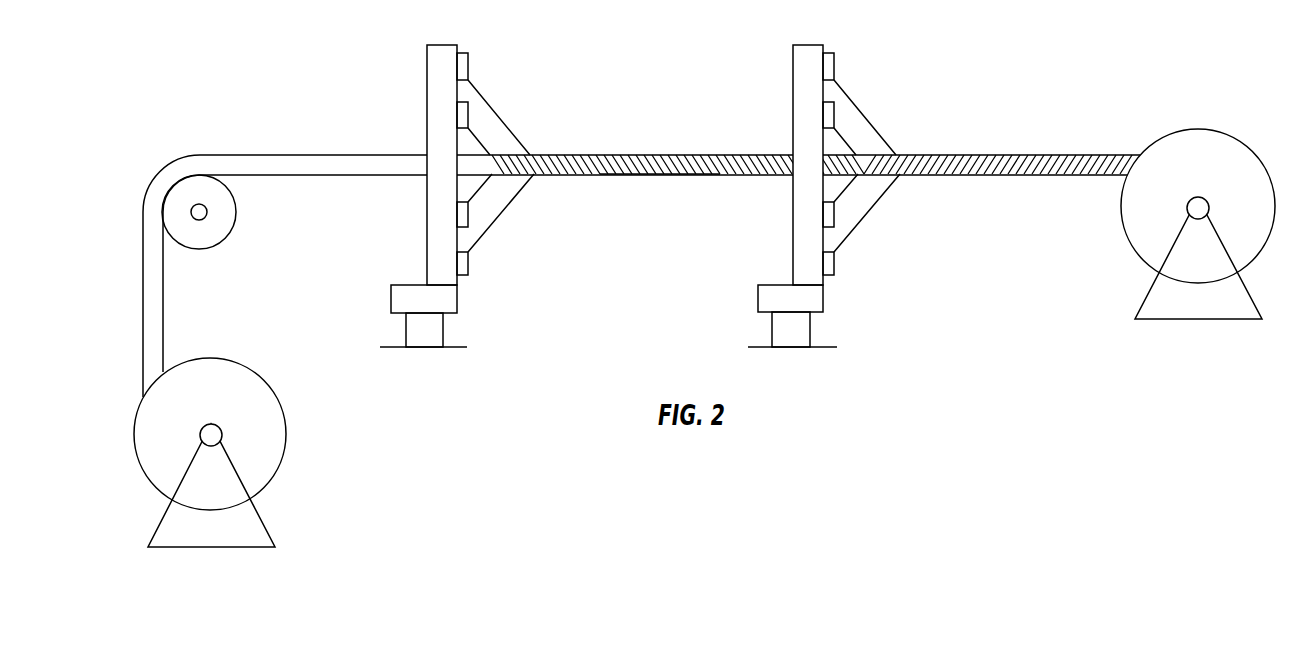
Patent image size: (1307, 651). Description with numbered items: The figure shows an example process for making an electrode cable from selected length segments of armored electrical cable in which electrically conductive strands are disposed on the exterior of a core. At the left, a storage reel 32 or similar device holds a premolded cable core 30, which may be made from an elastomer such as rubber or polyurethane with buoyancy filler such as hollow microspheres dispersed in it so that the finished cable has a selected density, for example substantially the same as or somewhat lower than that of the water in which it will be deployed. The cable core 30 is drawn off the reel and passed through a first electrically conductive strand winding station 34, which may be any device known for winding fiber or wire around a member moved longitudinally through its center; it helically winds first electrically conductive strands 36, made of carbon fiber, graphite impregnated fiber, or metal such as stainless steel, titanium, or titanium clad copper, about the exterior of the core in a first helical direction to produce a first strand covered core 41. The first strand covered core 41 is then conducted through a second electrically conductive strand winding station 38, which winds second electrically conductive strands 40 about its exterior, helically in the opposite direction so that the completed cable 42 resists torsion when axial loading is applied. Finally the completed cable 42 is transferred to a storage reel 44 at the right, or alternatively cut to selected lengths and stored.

The cable core 30 is at (212, 155).
The storage reel 32 is at (232, 380).
The first electrically conductive strand winding station 34 is at (442, 46).
The first electrically conductive strands 36 is at (484, 98).
The second electrically conductive strand winding station 38 is at (808, 46).
The second electrically conductive strands 40 is at (848, 97).
The first strand covered core 41 is at (658, 176).
The completed cable 42 is at (992, 155).
The storage reel 44 is at (1223, 155).